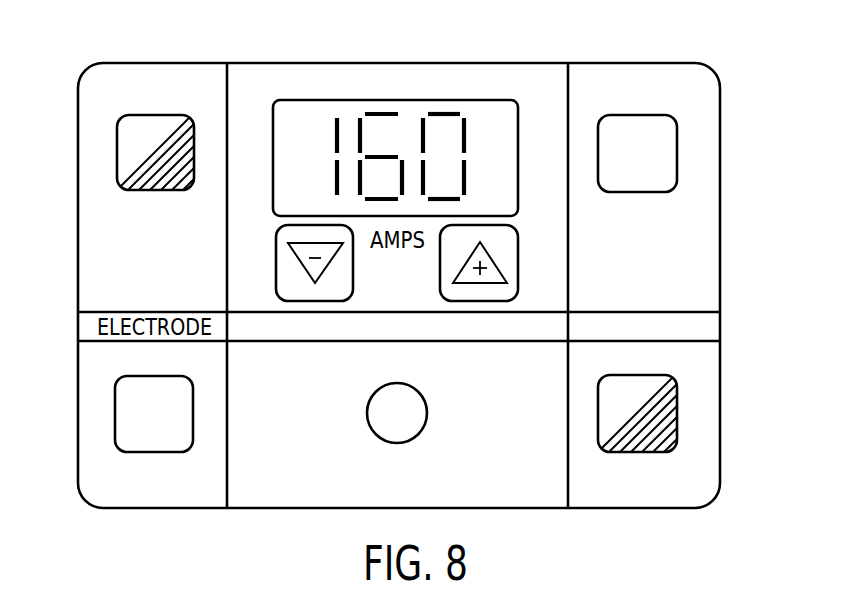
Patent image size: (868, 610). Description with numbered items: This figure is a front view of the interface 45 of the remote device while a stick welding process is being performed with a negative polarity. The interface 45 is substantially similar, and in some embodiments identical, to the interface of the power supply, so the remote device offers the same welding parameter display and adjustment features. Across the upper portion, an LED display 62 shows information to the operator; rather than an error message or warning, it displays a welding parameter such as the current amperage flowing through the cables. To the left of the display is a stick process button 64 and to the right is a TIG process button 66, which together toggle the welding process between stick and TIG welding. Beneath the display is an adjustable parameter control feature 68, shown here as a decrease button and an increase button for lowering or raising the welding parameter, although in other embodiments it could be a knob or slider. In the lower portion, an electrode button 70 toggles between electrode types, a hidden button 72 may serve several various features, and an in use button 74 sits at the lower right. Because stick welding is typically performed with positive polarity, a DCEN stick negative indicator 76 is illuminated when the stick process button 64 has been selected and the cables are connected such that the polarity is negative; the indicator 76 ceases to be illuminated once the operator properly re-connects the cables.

The interface 45 is at (737, 50).
The LED display 62 is at (489, 113).
The stick process button 64 is at (130, 160).
The TIG process button 66 is at (663, 153).
The adjustable parameter control feature 68 is at (510, 257).
The electrode button 70 is at (132, 418).
The hidden button 72 is at (400, 423).
The in use button 74 is at (670, 412).
The DCEN stick negative indicator 76 is at (258, 495).